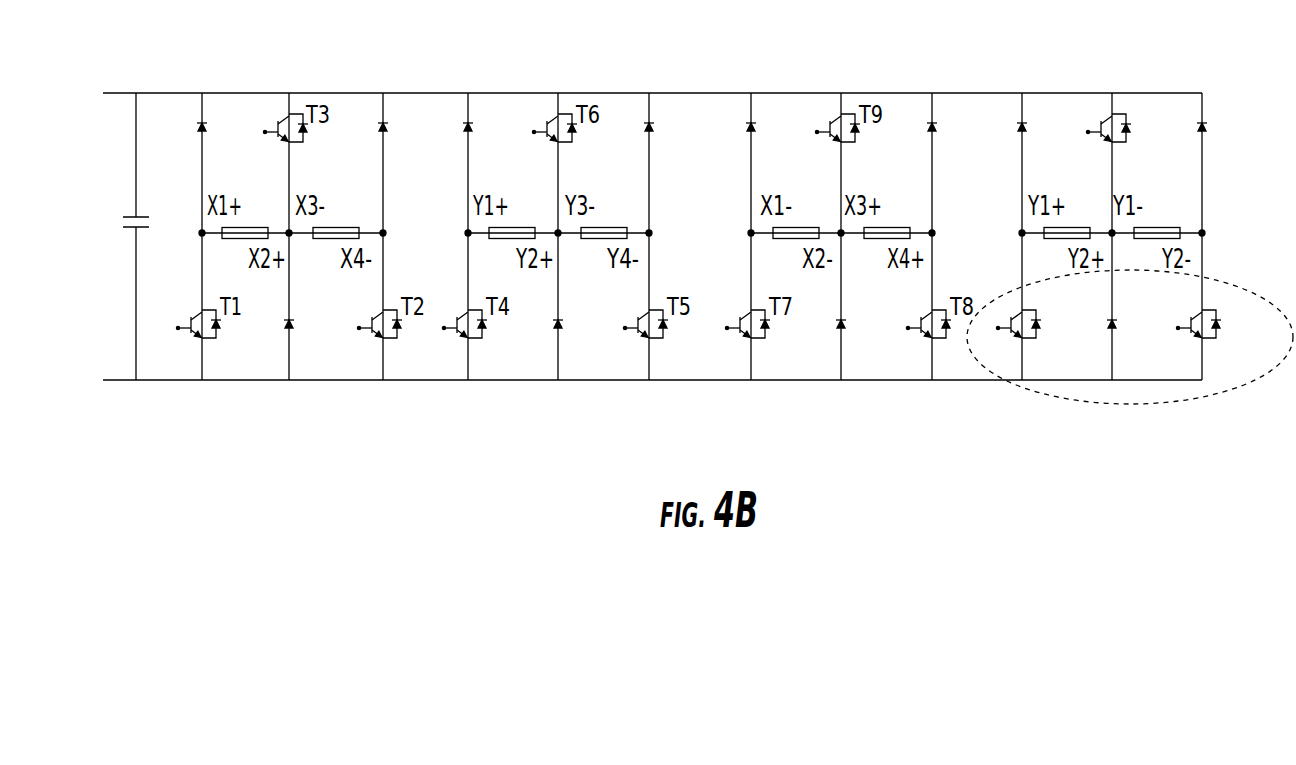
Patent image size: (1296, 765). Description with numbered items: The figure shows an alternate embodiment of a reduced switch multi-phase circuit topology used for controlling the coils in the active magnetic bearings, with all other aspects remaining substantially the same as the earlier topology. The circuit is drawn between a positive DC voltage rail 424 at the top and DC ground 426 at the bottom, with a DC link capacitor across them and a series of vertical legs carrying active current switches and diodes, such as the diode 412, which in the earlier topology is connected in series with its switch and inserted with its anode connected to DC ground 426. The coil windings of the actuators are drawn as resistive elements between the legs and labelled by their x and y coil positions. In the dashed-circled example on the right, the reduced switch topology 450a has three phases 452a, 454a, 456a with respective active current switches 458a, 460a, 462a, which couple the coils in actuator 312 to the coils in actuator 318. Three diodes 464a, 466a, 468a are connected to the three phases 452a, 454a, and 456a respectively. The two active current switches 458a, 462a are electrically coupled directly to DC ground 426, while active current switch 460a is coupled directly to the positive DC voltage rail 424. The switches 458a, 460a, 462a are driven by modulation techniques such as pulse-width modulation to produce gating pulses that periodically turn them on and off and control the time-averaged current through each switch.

The positive DC voltage rail 424 is at (770, 90).
The DC ground 426 is at (733, 382).
The diode 412 is at (838, 300).
The reduced switch topology 450a is at (352, 408).
The phase 452a is at (1020, 205).
The diode 464a is at (1020, 125).
The actuator 312 is at (1063, 232).
The active current switch 460a is at (1112, 110).
The actuator 318 is at (1163, 232).
The diode 468a is at (1205, 126).
The phase 456a is at (1204, 230).
The active current switch 458a is at (1018, 333).
The phase 454a is at (1108, 263).
The diode 466a is at (1112, 328).
The active current switch 462a is at (1212, 338).